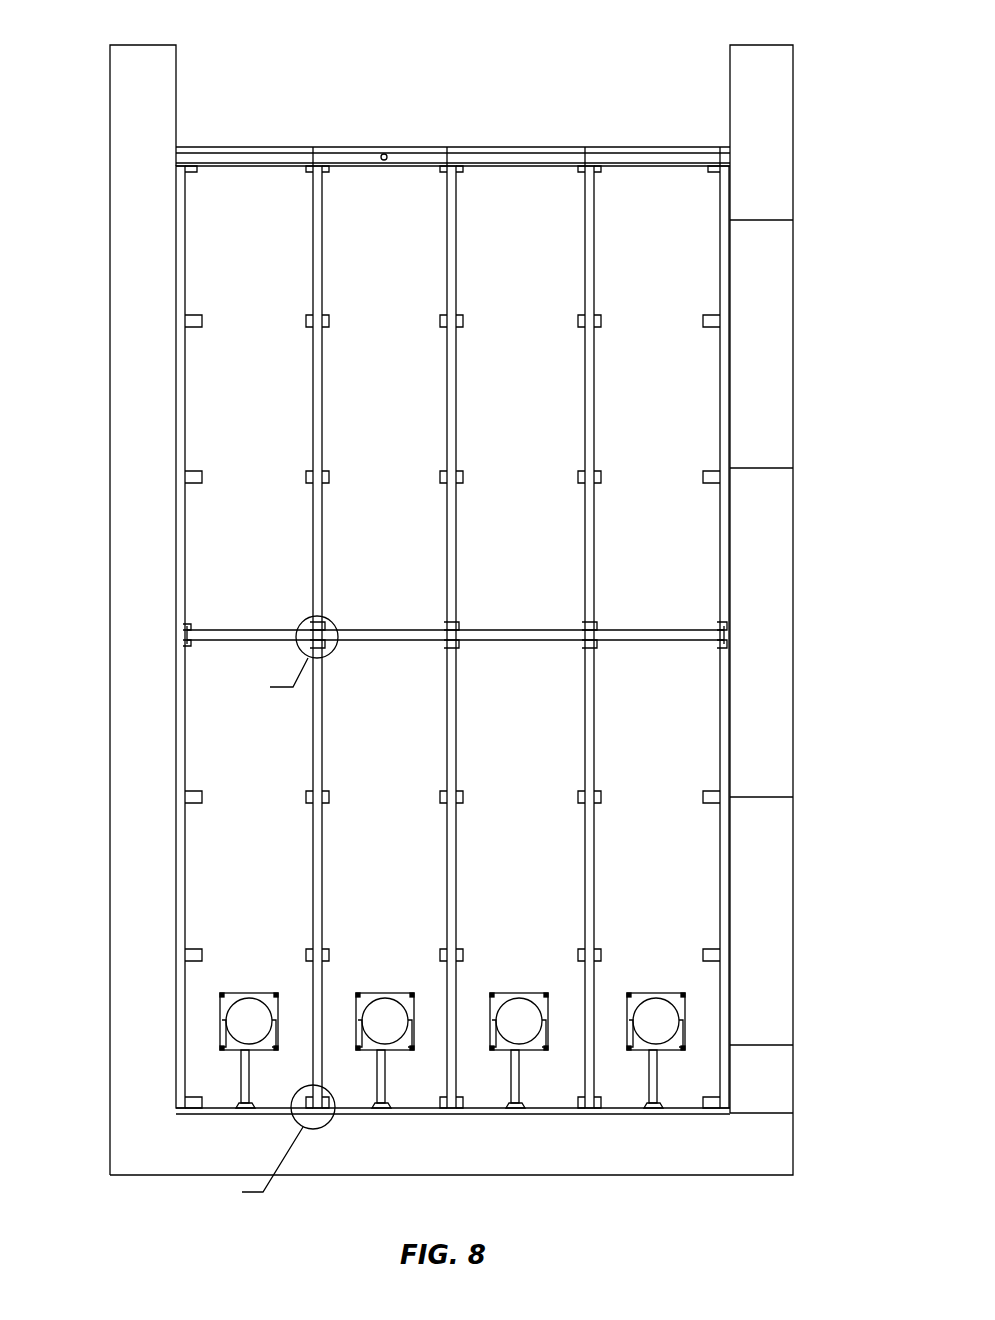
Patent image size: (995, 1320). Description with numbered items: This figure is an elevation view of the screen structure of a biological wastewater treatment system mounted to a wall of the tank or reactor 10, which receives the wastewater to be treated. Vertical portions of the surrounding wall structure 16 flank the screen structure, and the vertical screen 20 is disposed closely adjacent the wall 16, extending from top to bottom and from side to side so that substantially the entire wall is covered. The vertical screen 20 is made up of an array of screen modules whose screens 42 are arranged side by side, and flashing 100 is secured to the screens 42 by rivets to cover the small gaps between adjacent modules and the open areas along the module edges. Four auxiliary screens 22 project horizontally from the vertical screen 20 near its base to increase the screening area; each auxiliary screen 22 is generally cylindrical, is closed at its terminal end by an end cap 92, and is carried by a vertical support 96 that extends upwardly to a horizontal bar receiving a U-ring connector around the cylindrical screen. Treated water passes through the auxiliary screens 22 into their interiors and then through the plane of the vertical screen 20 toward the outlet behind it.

The tank or reactor 10 is at (616, 50).
The wall 16 is at (138, 96).
The vertical screen 20 is at (468, 676).
The auxiliary screen 22 is at (367, 1106).
The screen 42 is at (250, 563).
The end cap 92 is at (243, 1029).
The vertical support 96 is at (389, 1090).
The flashing 100 is at (650, 632).